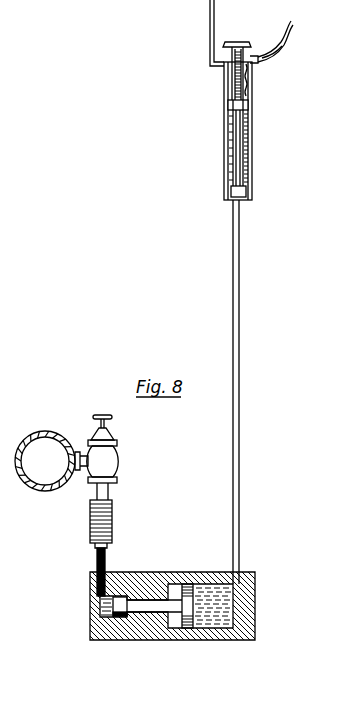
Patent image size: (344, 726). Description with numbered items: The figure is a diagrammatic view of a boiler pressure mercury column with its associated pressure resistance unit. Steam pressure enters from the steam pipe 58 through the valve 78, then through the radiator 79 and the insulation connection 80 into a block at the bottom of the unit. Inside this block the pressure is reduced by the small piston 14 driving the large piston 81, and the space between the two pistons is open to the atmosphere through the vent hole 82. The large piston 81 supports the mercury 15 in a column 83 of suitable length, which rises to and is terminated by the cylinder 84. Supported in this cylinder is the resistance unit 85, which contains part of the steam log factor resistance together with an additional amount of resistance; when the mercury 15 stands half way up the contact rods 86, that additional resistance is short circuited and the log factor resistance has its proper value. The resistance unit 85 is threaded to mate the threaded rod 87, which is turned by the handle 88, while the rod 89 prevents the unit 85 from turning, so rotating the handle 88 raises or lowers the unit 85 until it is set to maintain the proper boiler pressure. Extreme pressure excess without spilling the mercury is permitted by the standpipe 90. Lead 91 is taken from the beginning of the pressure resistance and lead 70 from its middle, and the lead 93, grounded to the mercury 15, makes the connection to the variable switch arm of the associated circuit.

The small piston 14 is at (118, 617).
The mercury 15 is at (250, 160).
The steam pipe 58 is at (53, 432).
The lead 70 is at (270, 55).
The valve 78 is at (120, 461).
The radiator 79 is at (113, 521).
The insulation connection 80 is at (97, 553).
The large piston 81 is at (186, 628).
The vent hole 82 is at (173, 572).
The column 83 is at (241, 403).
The cylinder 84 is at (246, 140).
The resistance unit 85 is at (228, 106).
The contact rods 86 is at (226, 114).
The threaded rod 87 is at (247, 178).
The handle 88 is at (237, 42).
The rod 89 is at (224, 86).
The standpipe 90 is at (210, 17).
The lead 91 is at (281, 38).
The lead 93 is at (252, 92).